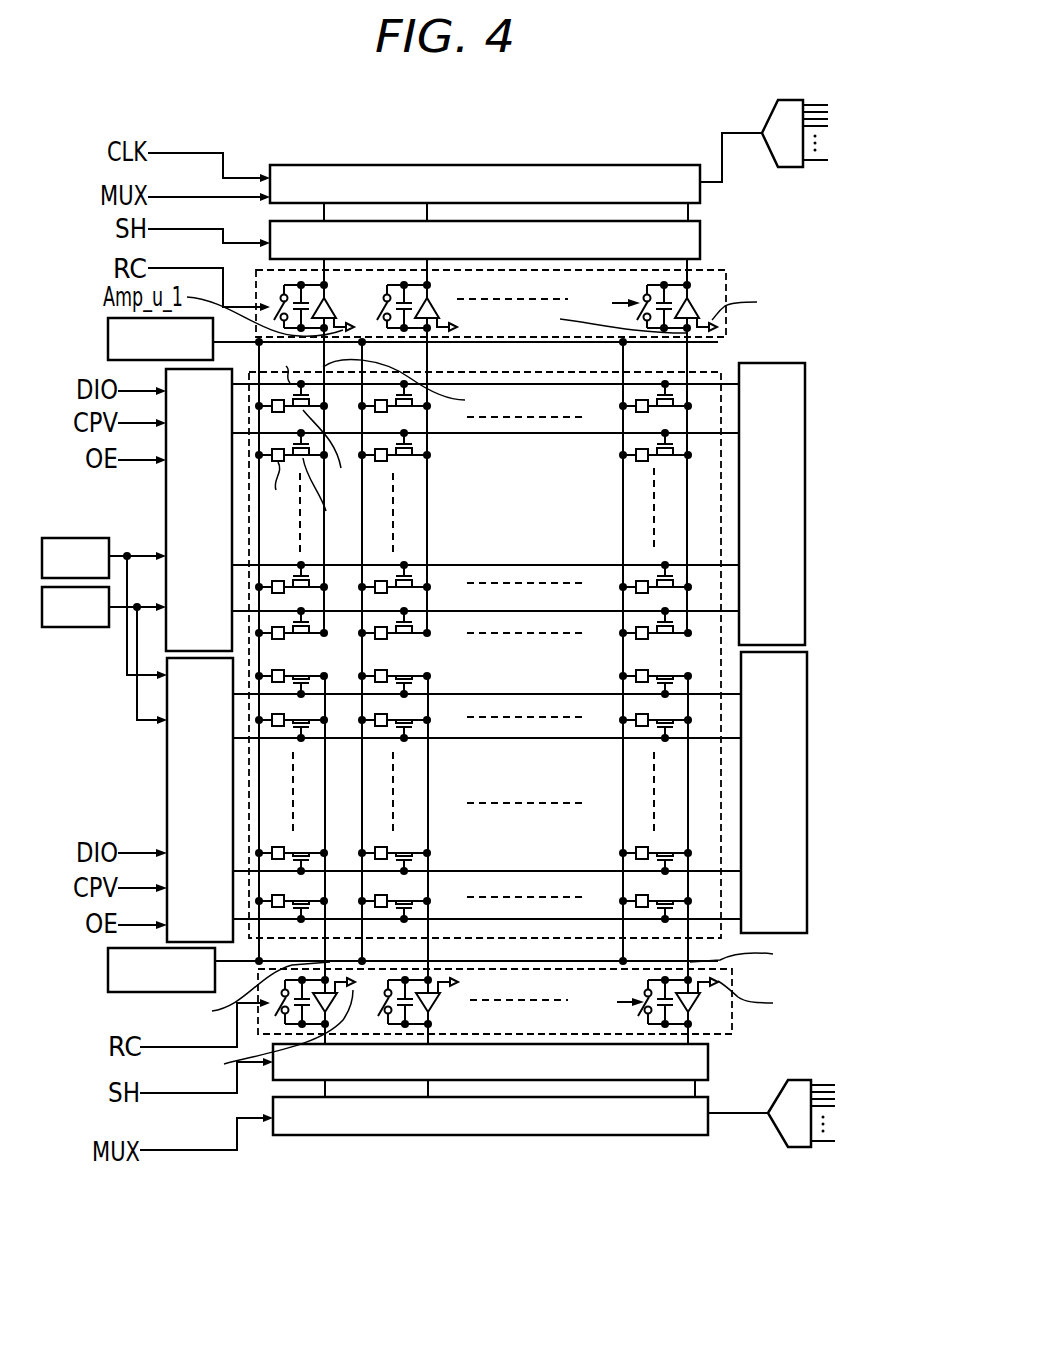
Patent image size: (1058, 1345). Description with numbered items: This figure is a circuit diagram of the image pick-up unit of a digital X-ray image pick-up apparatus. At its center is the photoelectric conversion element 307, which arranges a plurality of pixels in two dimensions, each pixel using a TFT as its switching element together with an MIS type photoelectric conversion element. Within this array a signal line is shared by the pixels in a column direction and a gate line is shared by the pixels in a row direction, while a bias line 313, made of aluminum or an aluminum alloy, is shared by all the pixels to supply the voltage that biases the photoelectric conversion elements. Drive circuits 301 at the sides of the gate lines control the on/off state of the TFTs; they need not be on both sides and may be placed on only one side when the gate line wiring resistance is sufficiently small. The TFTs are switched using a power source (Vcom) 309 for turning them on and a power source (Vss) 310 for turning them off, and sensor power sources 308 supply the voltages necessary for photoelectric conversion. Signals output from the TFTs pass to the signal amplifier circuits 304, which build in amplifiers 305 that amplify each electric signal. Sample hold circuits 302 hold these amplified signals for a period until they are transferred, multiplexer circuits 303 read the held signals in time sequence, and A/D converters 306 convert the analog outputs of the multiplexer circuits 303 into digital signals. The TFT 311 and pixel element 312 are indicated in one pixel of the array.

The drive circuits 301 is at (166, 505).
The sample hold circuits 302 is at (540, 221).
The multiplexer circuits 303 is at (471, 165).
The signal amplifier circuits 304 is at (707, 263).
The amplifiers 305 is at (694, 300).
The A/D converters 306 is at (790, 100).
The photoelectric conversion element 307 is at (507, 666).
The sensor power sources 308 is at (108, 338).
The power source (Vcom) 309 is at (67, 538).
The power source (Vss) 310 is at (67, 627).
The switching TFT 311 is at (405, 457).
The photoelectric conversion element 312 is at (388, 458).
The bias line 313 is at (363, 493).